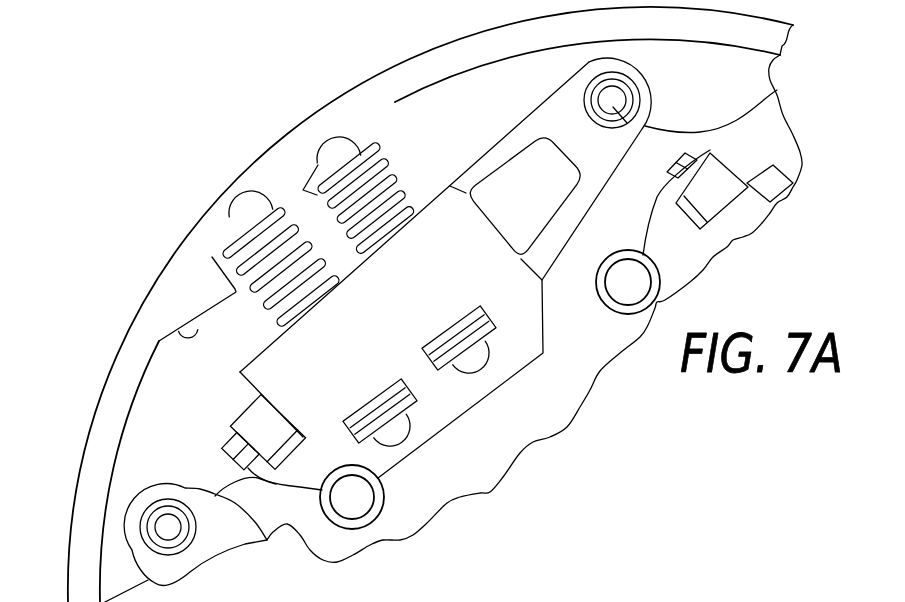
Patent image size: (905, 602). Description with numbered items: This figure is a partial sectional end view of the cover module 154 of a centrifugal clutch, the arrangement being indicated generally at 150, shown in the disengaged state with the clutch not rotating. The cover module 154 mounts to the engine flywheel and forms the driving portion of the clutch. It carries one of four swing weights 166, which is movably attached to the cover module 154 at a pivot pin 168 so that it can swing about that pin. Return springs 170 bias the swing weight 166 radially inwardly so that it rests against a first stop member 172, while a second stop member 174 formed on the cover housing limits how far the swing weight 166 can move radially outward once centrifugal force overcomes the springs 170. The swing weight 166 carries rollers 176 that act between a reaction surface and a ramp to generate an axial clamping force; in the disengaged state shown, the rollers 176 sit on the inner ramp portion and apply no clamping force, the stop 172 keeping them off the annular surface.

The brake assembly 150 is at (148, 214).
The cover module 154 is at (264, 120).
The swing weights 166 is at (396, 336).
The pivot pins 168 is at (777, 90).
The return springs 170 is at (387, 202).
The first stop member 172 is at (384, 491).
The second stop member 174 is at (174, 338).
The rollers 176 is at (252, 415).